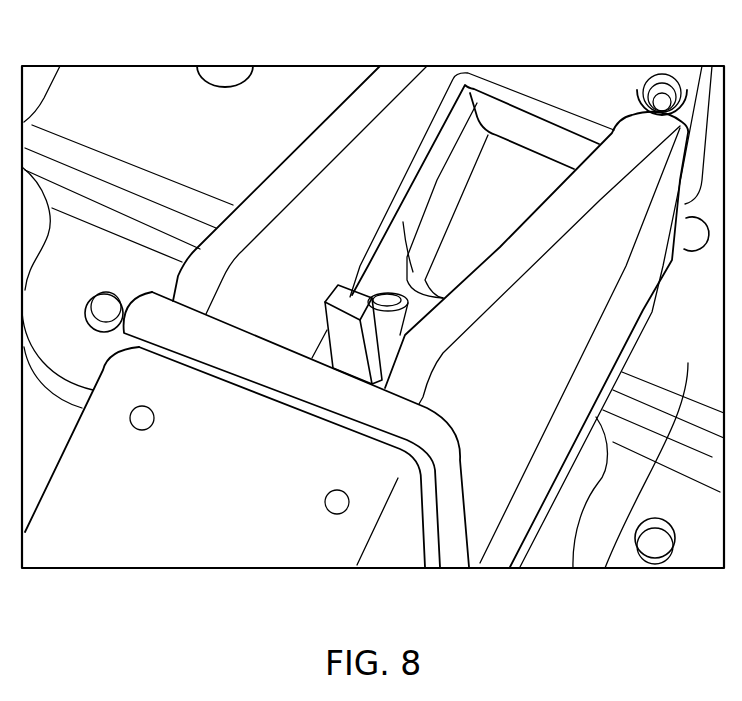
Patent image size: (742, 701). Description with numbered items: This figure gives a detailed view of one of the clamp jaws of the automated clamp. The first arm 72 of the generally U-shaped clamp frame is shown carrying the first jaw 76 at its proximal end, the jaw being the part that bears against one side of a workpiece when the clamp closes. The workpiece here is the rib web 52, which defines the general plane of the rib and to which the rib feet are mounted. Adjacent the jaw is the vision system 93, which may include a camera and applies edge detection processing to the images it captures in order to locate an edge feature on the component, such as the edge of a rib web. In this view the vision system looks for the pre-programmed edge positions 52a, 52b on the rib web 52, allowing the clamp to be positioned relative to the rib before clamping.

The first jaw 76 is at (588, 78).
The first arm 72 is at (243, 547).
The vision system 93 is at (368, 270).
The rib web 52 is at (604, 568).
The pre-programmed edge position 52a is at (460, 188).
The pre-programmed edge position 52b is at (450, 272).